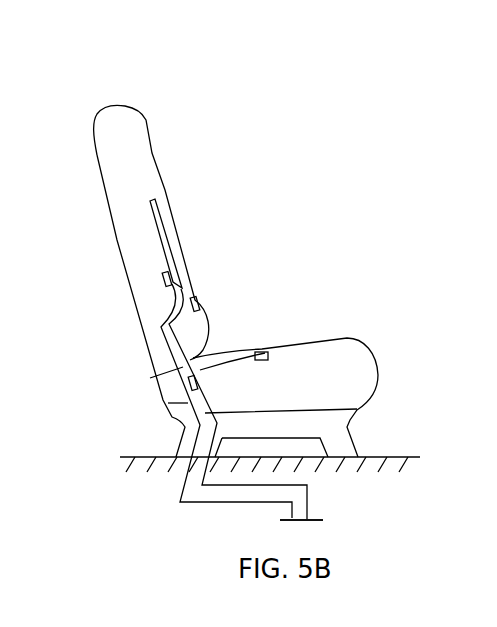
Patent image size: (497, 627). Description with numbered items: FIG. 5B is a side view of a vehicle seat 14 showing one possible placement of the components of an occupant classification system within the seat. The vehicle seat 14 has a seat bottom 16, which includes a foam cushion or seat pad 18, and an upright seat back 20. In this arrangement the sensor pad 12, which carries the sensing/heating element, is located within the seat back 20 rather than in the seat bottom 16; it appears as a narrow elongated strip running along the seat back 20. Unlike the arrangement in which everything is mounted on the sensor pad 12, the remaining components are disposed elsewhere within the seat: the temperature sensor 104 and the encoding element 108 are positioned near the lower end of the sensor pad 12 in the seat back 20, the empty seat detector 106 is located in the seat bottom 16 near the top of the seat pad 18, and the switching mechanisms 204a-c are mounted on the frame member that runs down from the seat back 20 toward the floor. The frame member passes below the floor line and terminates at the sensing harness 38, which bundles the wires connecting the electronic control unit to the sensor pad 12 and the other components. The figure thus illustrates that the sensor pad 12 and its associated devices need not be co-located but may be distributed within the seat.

The sensor pad 12 is at (166, 239).
The vehicle seat 14 is at (111, 183).
The seat bottom 16 is at (380, 373).
The seat pad 18 is at (348, 367).
The seat back 20 is at (130, 243).
The sensing harness 38 is at (303, 518).
The temperature sensor 104 is at (175, 317).
The empty seat detector 106 is at (268, 350).
The encoding element 108 is at (163, 280).
The switching mechanisms 204a-c is at (188, 382).